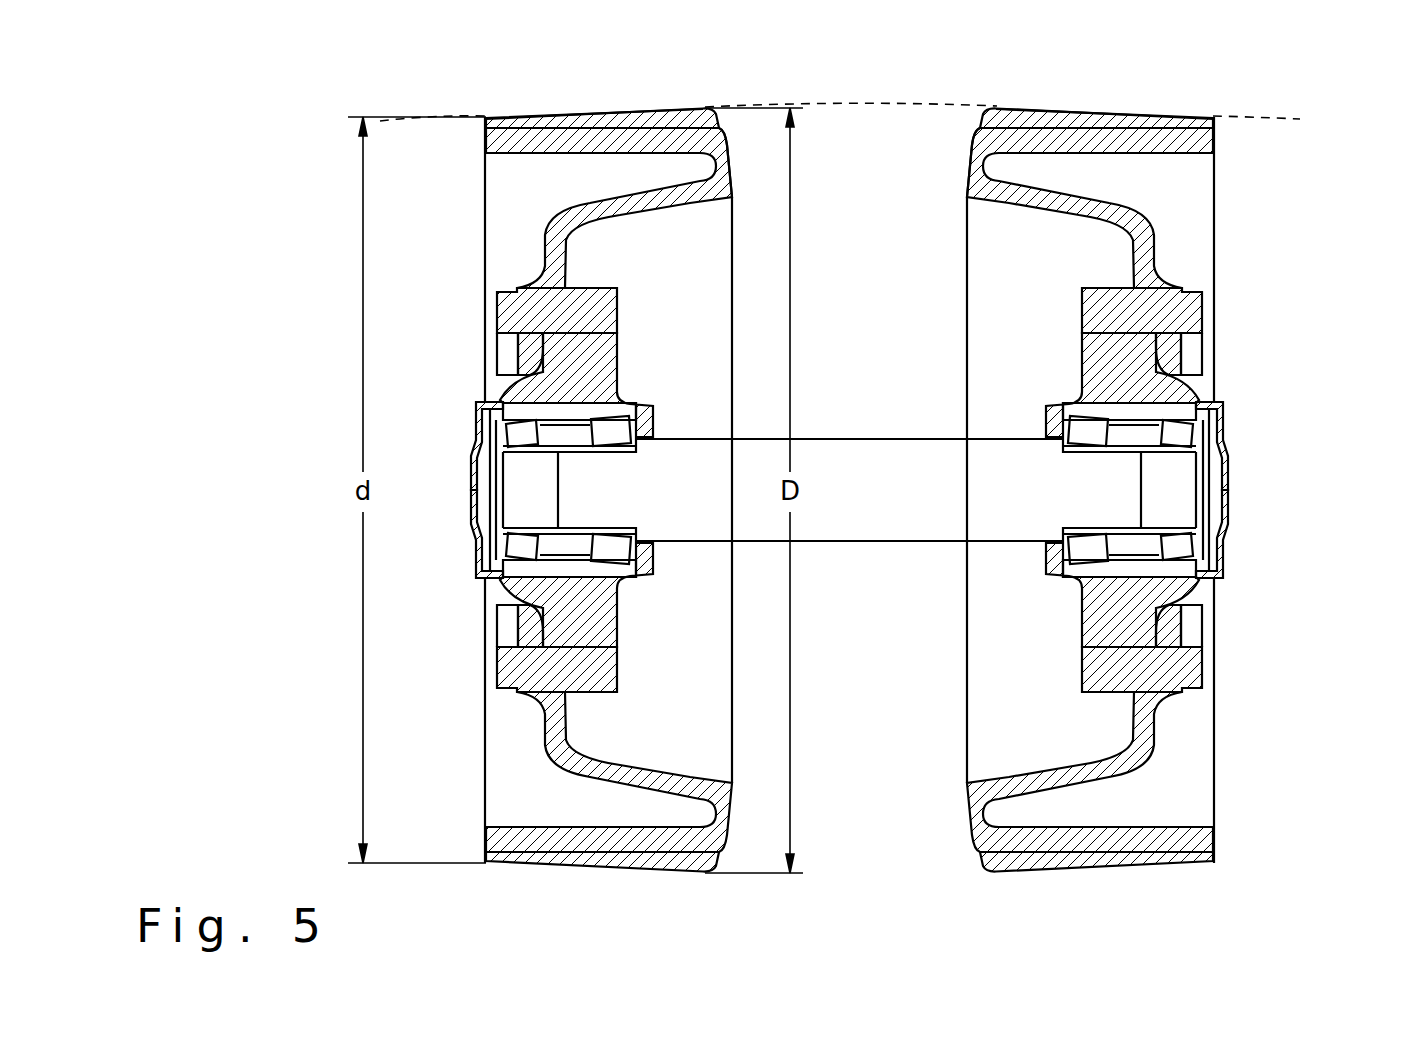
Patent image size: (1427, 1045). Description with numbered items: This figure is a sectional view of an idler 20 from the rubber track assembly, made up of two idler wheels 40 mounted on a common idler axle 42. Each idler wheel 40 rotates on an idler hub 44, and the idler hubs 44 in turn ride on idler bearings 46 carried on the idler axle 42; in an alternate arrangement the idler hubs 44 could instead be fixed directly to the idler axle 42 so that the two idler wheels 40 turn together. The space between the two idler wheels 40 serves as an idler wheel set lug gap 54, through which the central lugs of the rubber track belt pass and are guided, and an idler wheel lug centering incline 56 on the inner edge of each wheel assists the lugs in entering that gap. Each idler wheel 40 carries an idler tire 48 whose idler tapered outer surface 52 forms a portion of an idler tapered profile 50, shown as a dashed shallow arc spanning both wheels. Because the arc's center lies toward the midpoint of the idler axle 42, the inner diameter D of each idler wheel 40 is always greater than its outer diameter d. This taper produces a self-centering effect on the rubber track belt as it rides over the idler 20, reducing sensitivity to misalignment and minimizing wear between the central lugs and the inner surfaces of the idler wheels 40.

The idler 20 is at (1276, 230).
The idler wheel 40 is at (851, 490).
The idler axle 42 is at (849, 530).
The idler hub 44 is at (852, 464).
The idler bearing 46 is at (809, 489).
The idler tire 48 is at (849, 516).
The idler tapered profile 50 is at (940, 104).
The idler tapered outer surface 52 is at (855, 75).
The idler wheel set lug gap 54 is at (836, 86).
The idler wheel lug centering incline 56 is at (849, 127).